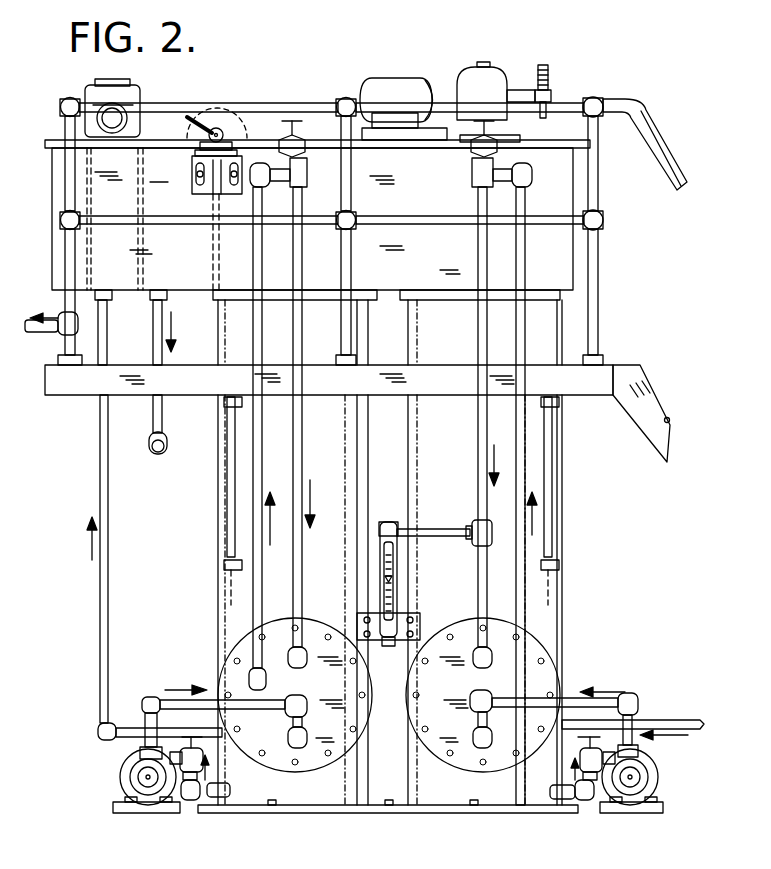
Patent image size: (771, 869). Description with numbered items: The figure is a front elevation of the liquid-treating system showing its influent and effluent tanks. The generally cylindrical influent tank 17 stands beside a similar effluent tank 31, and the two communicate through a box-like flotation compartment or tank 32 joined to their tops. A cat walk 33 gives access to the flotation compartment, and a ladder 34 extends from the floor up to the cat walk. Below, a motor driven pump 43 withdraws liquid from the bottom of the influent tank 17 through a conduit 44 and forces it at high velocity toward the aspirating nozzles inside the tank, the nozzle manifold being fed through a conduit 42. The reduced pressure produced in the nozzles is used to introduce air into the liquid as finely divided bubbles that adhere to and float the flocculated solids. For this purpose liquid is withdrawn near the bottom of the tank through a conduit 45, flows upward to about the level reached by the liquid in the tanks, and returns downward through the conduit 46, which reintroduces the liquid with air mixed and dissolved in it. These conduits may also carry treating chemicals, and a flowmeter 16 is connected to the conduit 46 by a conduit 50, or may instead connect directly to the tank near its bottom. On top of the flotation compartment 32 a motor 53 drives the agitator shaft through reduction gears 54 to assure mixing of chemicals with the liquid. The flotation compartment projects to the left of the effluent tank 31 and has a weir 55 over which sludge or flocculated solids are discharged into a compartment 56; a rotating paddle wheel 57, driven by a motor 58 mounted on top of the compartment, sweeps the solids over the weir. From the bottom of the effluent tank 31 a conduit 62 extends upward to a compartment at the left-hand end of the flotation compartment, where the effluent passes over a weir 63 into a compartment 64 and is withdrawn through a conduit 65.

The flowmeter 16 is at (392, 557).
The influent tank 17 is at (557, 590).
The effluent tank 31 is at (225, 605).
The flotation compartment 32 is at (562, 262).
The cat walk 33 is at (558, 382).
The ladder 34 is at (648, 402).
The conduit 42 is at (568, 702).
The motor driven pump 43 is at (643, 768).
The conduit 44 is at (585, 795).
The conduit 45 is at (522, 618).
The conduit 46 is at (480, 449).
The conduit 50 is at (435, 532).
The motor 53 is at (397, 83).
The reduction gears 54 is at (498, 88).
The weir 55 is at (212, 250).
The compartment 56 is at (198, 177).
The rotating paddle wheel 57 is at (205, 113).
The motor 58 is at (165, 418).
The conduit 62 is at (100, 691).
The weir 63 is at (86, 188).
The compartment 64 is at (60, 252).
The conduit 65 is at (37, 333).